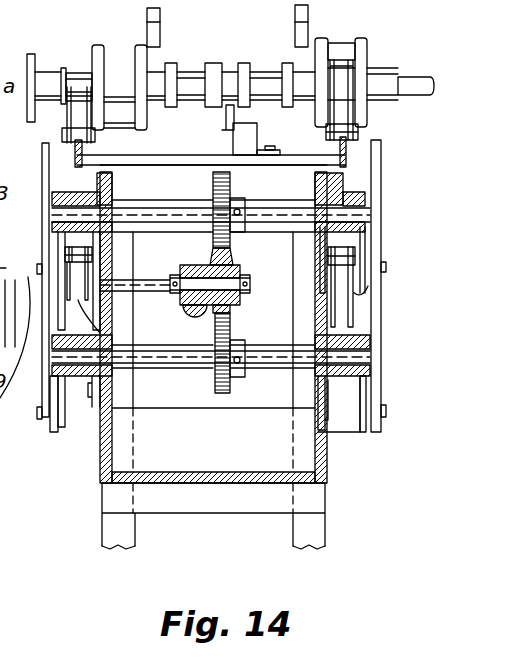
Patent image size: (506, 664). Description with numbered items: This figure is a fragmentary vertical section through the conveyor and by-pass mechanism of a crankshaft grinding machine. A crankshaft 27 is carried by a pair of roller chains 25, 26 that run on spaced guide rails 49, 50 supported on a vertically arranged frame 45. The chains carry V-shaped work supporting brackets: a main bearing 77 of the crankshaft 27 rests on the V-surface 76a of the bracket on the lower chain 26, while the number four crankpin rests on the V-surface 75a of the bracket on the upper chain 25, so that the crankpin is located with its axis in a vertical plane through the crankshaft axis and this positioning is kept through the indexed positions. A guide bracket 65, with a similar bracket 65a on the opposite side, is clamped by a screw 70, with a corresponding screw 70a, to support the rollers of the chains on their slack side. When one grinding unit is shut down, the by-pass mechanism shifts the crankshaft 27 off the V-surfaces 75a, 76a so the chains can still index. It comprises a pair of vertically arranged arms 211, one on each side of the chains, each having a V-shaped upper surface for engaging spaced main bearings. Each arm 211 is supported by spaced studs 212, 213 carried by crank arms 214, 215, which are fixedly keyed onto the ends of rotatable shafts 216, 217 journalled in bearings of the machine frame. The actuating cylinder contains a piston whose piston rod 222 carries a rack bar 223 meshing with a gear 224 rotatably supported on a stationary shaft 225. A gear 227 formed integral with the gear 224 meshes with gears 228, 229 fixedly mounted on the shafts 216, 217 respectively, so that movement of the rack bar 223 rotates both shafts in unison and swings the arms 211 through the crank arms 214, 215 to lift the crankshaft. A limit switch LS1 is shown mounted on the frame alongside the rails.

The main bearing 77 is at (79, 73).
The crankshaft 27 is at (386, 66).
The V-surface 75a is at (350, 105).
The roller chain 25 is at (357, 136).
The V-surface 76a is at (67, 115).
The guide rail 50 is at (82, 145).
The roller chain 26 is at (66, 250).
The guide rail 49 is at (343, 150).
The limit switch LS1 is at (247, 147).
The arm 211 is at (45, 160).
The rotatable shaft 216 is at (148, 213).
The rotatable shaft 217 is at (168, 359).
The gear 228 is at (232, 185).
The gear 229 is at (226, 393).
The gear 227 is at (230, 258).
The gear 224 is at (190, 268).
The stationary shaft 225 is at (155, 284).
The piston rod 222 is at (186, 313).
The rack bar 223 is at (196, 325).
The crank arm 214 is at (56, 282).
The stud 212 is at (44, 266).
The guide bracket 65 is at (79, 298).
The link arms 65a is at (354, 300).
The crank arm 215 is at (57, 433).
The clamping screw 70 is at (88, 386).
The lower bracket 70a is at (333, 410).
The stud 213 is at (41, 420).
The frame 45 is at (125, 541).